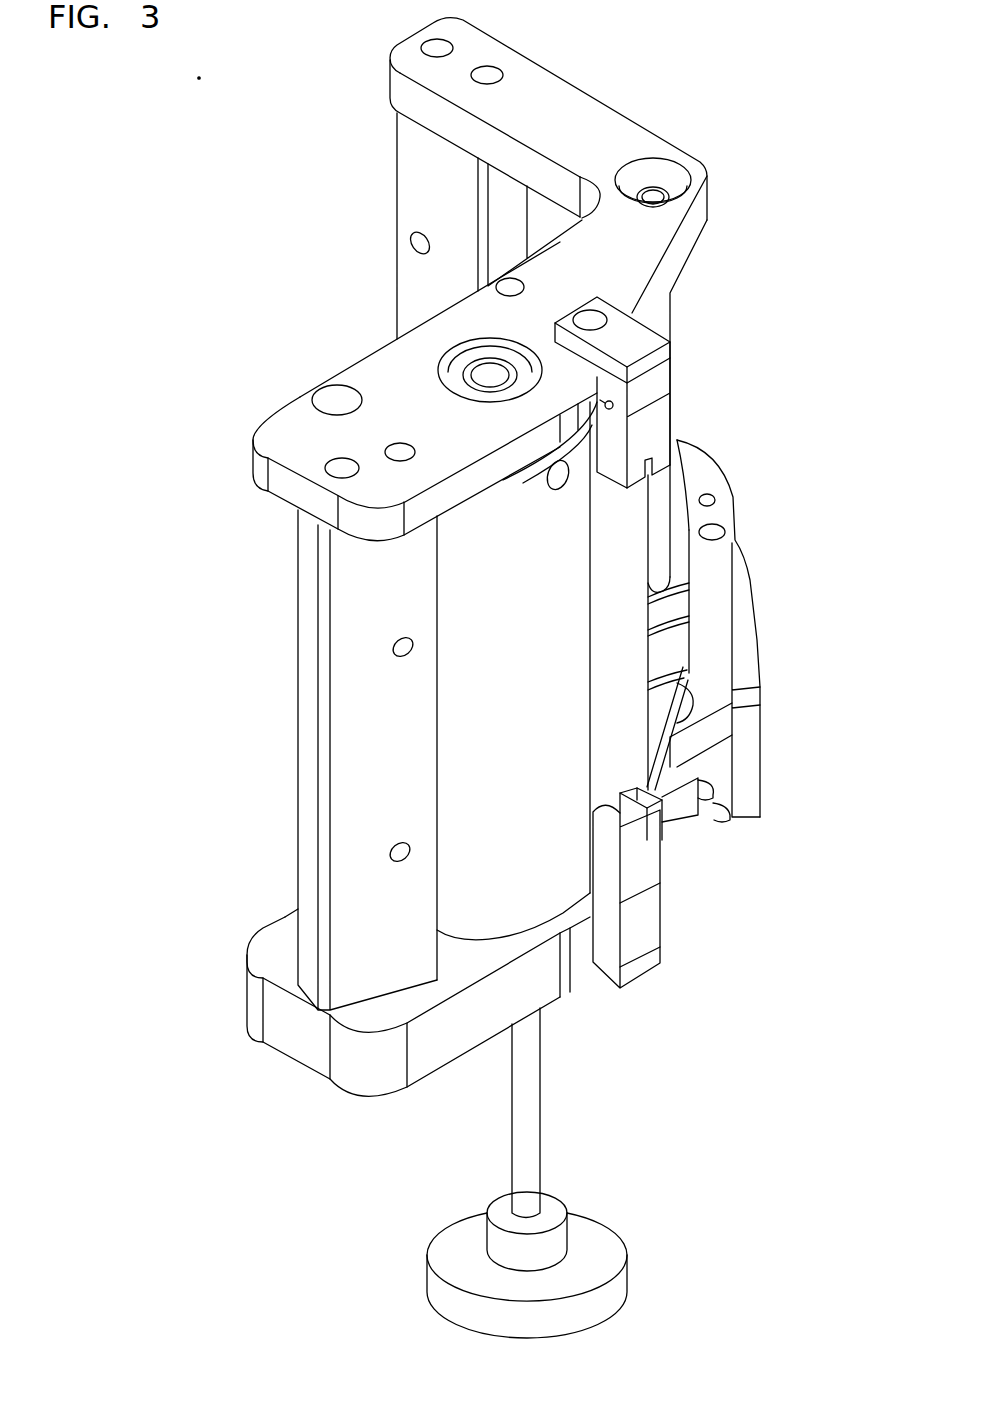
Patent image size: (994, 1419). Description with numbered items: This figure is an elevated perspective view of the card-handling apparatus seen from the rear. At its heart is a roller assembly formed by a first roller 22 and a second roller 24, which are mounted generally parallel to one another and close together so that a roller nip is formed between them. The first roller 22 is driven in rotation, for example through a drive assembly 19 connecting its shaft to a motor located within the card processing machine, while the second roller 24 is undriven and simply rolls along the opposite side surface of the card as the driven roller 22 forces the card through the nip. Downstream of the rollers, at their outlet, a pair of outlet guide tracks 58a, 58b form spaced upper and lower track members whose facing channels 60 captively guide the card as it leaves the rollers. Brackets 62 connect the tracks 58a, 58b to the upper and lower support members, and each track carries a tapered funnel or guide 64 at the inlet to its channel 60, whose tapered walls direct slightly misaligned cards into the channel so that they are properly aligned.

The drive assembly 19 is at (602, 1216).
The first roller 22 is at (497, 577).
The second roller 24 is at (628, 651).
The outlet guide track 58a is at (652, 426).
The outlet guide track 58b is at (642, 872).
The channel 60 is at (643, 827).
The bracket 62 is at (655, 357).
The tapered funnel or guide 64 is at (613, 803).